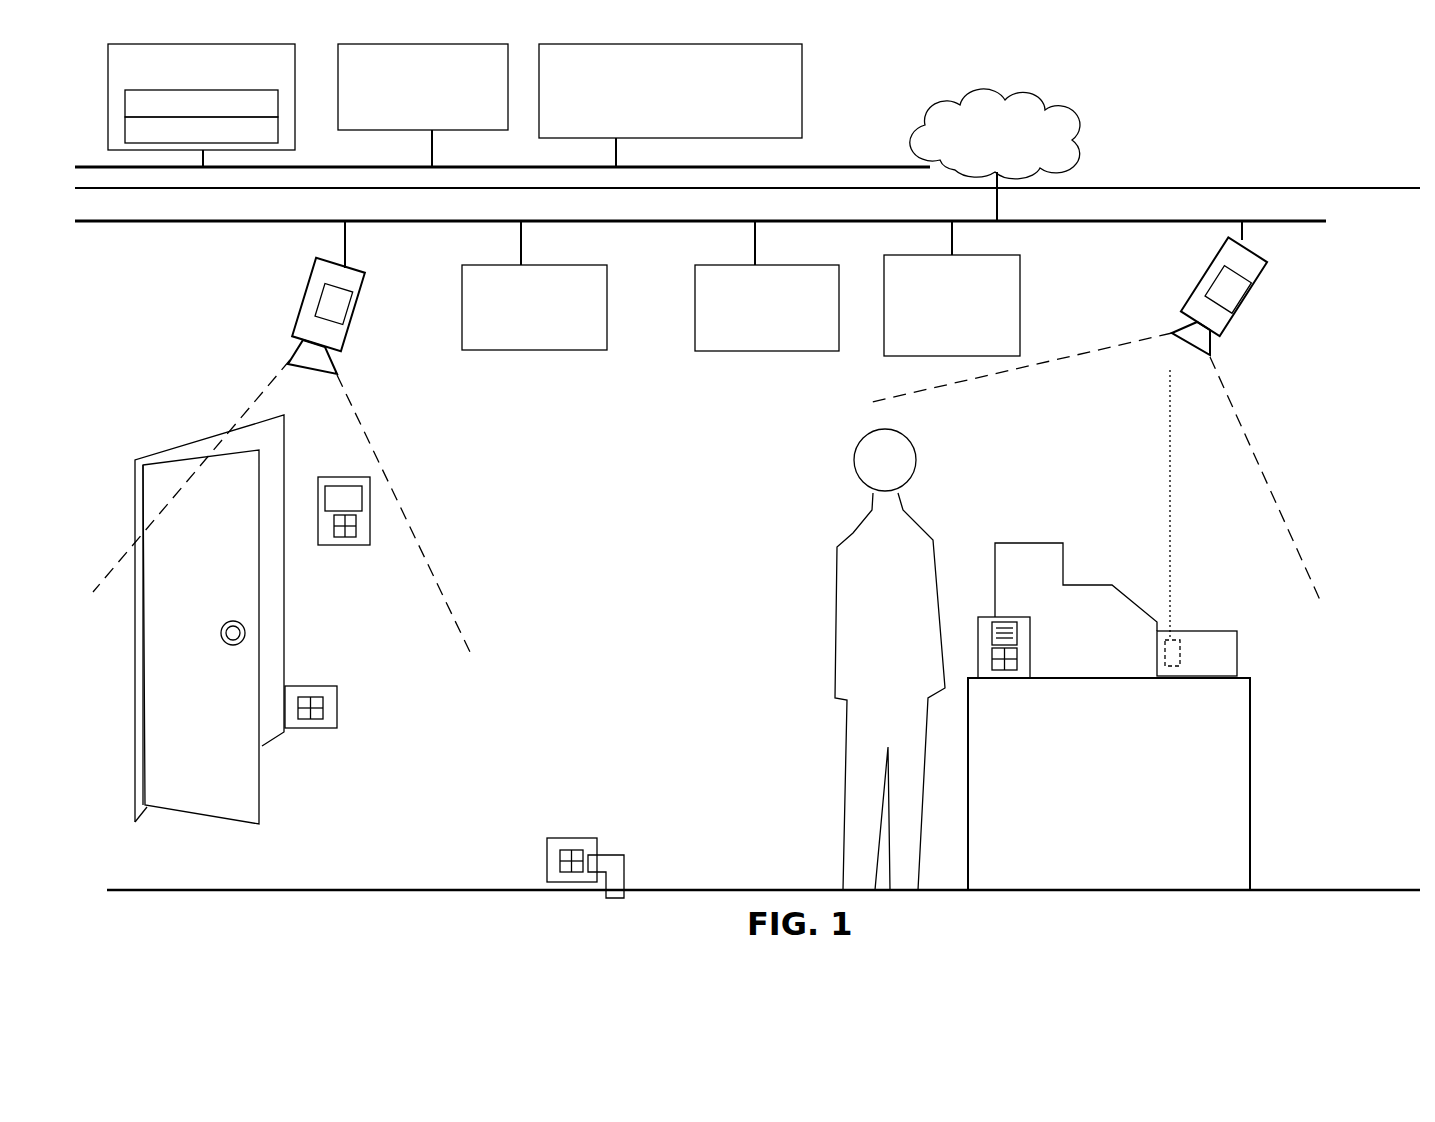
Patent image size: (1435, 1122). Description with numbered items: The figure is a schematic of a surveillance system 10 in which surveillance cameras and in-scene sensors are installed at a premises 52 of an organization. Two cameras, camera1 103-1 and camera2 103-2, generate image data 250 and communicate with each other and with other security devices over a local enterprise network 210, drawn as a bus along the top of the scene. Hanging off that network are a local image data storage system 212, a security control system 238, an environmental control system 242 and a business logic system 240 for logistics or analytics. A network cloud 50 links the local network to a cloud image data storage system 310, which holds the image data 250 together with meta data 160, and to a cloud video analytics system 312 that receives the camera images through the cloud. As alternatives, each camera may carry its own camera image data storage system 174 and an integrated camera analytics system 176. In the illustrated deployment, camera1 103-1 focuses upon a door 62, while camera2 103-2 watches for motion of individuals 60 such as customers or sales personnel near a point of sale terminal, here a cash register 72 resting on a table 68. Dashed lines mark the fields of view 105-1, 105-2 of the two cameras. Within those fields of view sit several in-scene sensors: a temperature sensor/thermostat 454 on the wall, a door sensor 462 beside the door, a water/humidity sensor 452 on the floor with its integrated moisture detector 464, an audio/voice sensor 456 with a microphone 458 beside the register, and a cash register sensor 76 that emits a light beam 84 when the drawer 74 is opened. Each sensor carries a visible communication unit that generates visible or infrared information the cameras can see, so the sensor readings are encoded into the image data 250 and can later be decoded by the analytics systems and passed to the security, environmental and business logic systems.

The system 10 is at (1268, 128).
The premises 52 is at (1310, 188).
The local network 210 is at (597, 221).
The network cloud 50 is at (995, 155).
The cloud image data storage system 310 is at (201, 105).
The image data 250 is at (201, 103).
The meta data 160 is at (201, 130).
The cloud video analytics system 312 is at (423, 105).
The business logic system 240 is at (670, 105).
The security control system 238 is at (534, 285).
The environmental control system 242 is at (767, 286).
The local image data storage system 212 is at (952, 288).
The camera1 103-1 is at (334, 298).
The camera2 103-2 is at (1240, 298).
The camera analytics system 176 is at (335, 325).
The camera image data storage system 174 is at (1228, 318).
The field of view 105-1 is at (355, 416).
The field of view 105-2 is at (1255, 422).
The door 62 is at (250, 788).
The temperature sensor/thermostat 454 is at (383, 534).
The door sensor 462 is at (337, 705).
The water/humidity sensor 452 is at (568, 838).
The moisture detector 464 is at (613, 855).
The individual 60 is at (850, 533).
The cash register 72 is at (1040, 543).
The microphone 458 is at (1017, 633).
The audio/voice sensor 456 is at (1003, 663).
The drawer 74 is at (1222, 655).
The cash register sensor 76 is at (1180, 652).
The light beam 84 is at (1166, 455).
The table 68 is at (1250, 790).